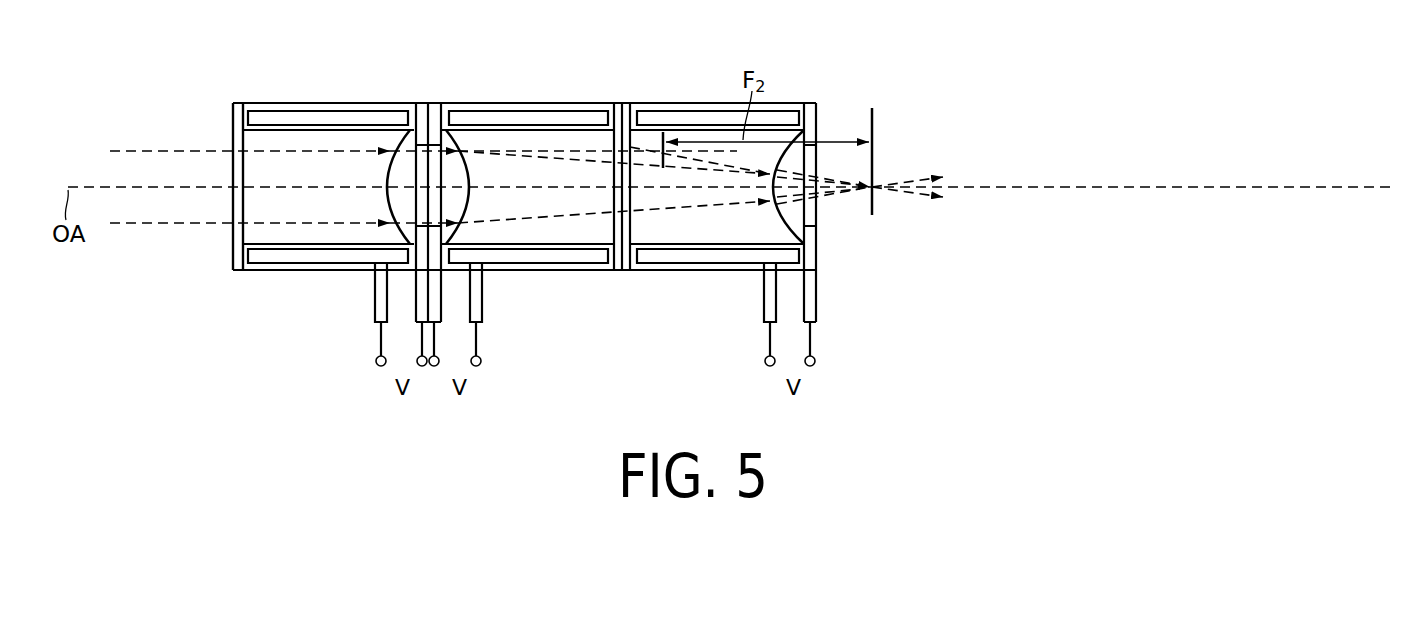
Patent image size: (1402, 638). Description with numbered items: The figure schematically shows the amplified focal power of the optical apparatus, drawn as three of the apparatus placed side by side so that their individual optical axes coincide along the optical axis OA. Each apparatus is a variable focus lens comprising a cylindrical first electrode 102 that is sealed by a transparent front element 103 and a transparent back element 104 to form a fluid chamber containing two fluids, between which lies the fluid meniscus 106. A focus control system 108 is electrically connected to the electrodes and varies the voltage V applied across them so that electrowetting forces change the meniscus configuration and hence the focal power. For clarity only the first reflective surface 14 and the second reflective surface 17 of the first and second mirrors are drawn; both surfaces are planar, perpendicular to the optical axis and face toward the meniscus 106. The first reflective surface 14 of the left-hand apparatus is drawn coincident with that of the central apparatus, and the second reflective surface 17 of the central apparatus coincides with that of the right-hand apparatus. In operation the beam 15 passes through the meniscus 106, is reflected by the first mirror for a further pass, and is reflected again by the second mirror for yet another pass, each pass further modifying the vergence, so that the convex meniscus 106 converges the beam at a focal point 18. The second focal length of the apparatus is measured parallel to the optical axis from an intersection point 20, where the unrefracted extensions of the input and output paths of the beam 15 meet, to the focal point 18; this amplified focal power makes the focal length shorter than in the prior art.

The first electrode 102 is at (270, 110).
The front element 103 is at (232, 254).
The back element 104 is at (418, 104).
The first reflective surface 14 is at (441, 104).
The beam 15 is at (129, 150).
The second reflective surface 17 is at (622, 102).
The focal point 18 is at (876, 185).
The intersection point 20 is at (665, 133).
The fluid meniscus 106 is at (386, 209).
The focus control system 108 is at (375, 308).